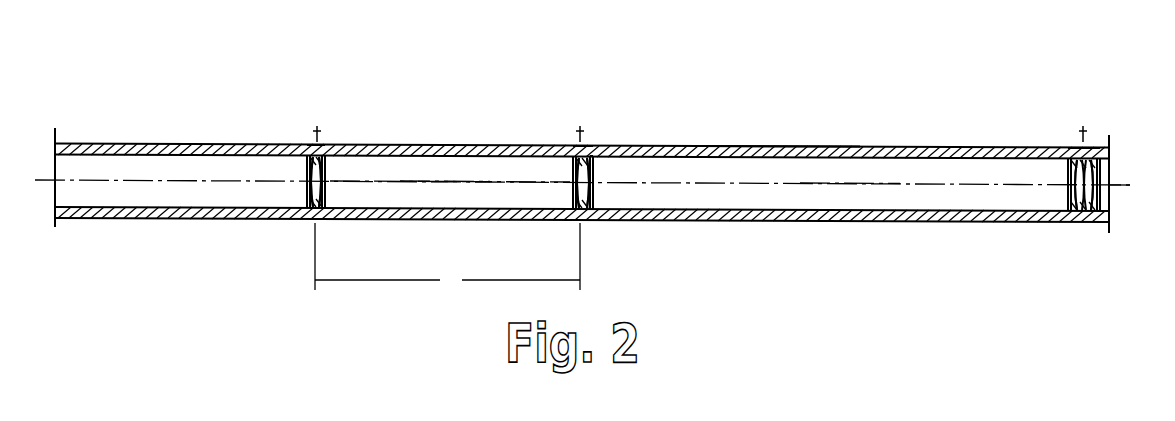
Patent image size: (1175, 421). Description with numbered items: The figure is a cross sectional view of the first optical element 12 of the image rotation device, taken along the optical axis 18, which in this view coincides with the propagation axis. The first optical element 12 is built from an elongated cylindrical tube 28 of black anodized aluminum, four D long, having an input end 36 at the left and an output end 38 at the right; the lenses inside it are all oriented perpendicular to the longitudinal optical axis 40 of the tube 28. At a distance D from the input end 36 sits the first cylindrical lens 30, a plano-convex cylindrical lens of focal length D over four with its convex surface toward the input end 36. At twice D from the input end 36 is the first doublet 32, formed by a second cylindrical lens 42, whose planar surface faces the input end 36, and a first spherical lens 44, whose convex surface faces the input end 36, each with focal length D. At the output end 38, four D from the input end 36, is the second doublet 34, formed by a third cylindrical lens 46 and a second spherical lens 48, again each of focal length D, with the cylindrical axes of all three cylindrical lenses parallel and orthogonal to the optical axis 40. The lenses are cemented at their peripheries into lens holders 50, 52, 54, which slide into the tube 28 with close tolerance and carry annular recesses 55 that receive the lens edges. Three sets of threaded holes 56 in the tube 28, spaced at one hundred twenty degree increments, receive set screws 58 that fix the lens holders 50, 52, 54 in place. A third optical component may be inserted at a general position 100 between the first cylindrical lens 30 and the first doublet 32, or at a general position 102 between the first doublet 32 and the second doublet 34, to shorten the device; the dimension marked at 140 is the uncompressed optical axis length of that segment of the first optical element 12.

The first optical element 12 is at (492, 145).
The optical axis 18 is at (110, 184).
The elongated cylindrical tube 28 is at (776, 145).
The first cylindrical lens 30 is at (305, 175).
The first doublet 32 is at (595, 150).
The second doublet 34 is at (1075, 147).
The input end 36 is at (55, 179).
The output end 38 is at (1107, 182).
The optical axis of tube 40 is at (360, 182).
The second cylindrical lens 42 is at (571, 176).
The first spherical lens 44 is at (595, 176).
The third cylindrical lens 46 is at (1067, 176).
The second spherical lens 48 is at (1111, 191).
The lens holder 50 is at (318, 218).
The lens holder 52 is at (583, 219).
The lens holder 54 is at (1085, 220).
The annular recesses 55 is at (307, 200).
The threaded holes 56 is at (314, 141).
The set screws 58 is at (316, 127).
The general position 100 is at (443, 184).
The general position 102 is at (851, 186).
The optical axis segment length 140 is at (447, 291).